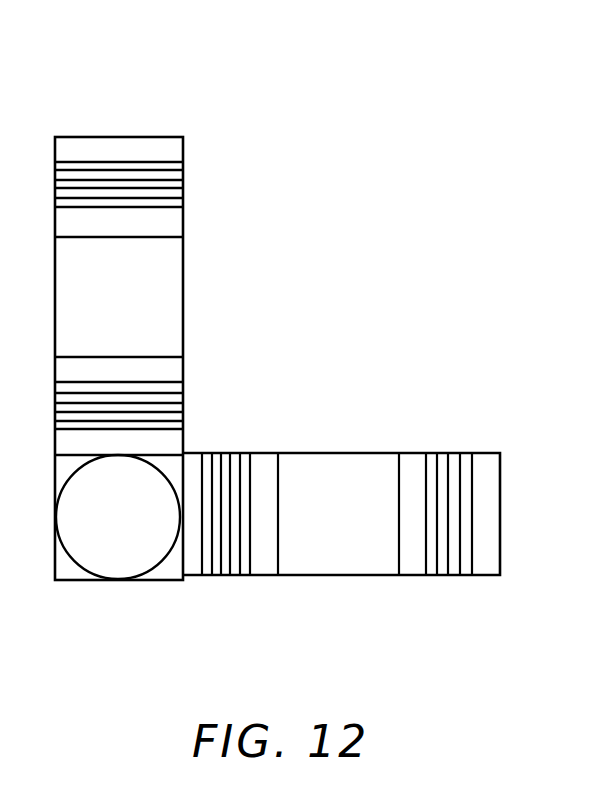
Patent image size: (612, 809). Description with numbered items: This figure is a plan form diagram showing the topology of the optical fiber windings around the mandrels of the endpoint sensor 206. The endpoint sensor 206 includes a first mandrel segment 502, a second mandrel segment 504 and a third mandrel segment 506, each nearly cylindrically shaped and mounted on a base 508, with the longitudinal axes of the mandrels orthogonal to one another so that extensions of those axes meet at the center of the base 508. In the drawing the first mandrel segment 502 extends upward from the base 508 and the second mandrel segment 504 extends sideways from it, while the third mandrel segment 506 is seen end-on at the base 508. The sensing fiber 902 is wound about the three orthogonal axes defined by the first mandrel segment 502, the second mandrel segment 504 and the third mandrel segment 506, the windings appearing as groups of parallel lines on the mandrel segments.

The endpoint sensor 206 is at (145, 108).
The first mandrel segment 502 is at (183, 298).
The sensing fiber 902 is at (183, 182).
The second mandrel segment 504 is at (332, 462).
The third mandrel segment 506 is at (138, 560).
The base 508 is at (72, 577).